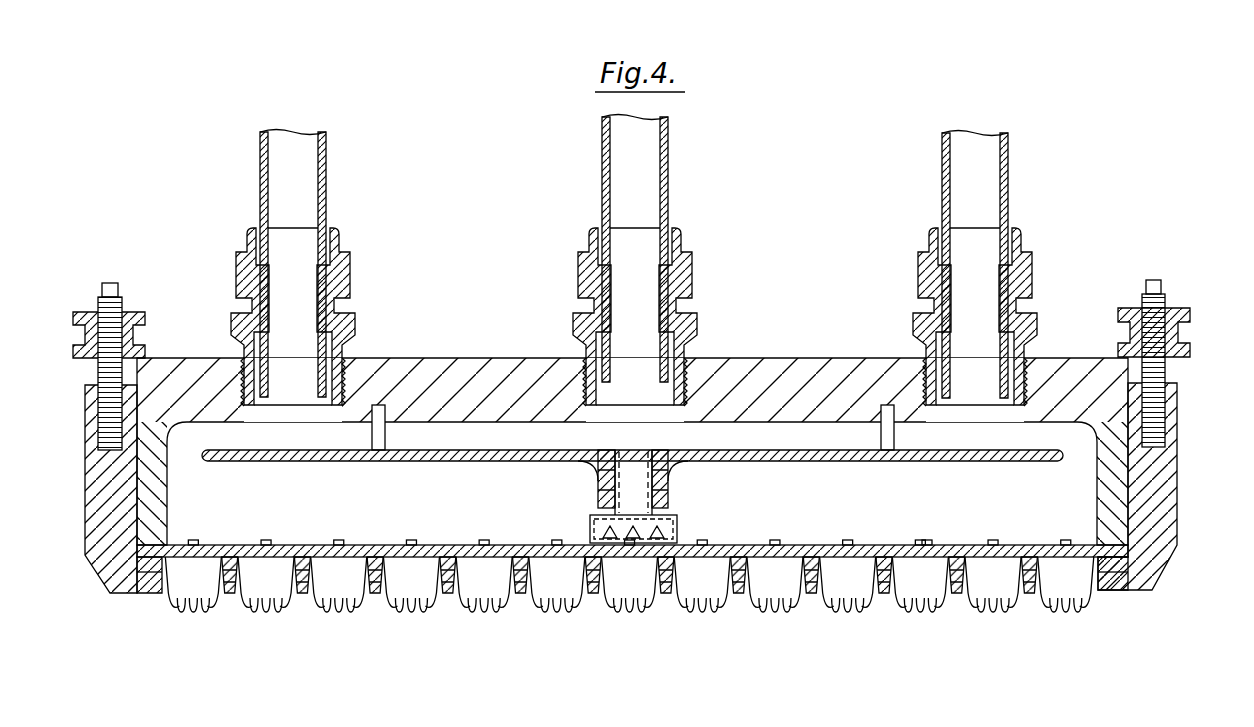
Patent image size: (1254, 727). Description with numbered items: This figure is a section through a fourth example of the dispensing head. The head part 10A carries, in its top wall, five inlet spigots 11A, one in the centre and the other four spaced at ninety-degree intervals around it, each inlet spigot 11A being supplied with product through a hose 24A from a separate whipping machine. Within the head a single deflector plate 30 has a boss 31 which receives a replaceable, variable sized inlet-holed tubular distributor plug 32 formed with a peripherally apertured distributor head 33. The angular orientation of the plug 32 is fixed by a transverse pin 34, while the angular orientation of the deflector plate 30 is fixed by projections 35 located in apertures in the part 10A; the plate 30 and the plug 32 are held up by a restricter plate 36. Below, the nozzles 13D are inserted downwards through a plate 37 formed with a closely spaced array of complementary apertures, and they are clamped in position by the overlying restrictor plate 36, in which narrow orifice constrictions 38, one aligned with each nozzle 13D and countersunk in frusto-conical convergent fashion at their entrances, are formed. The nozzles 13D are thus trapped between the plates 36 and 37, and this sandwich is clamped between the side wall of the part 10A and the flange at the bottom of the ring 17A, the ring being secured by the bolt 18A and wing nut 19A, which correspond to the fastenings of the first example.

The head part 10A is at (778, 368).
The inlet spigot 11A is at (338, 303).
The hose 24A is at (327, 193).
The nozzle 13D is at (833, 607).
The ring 17A is at (1165, 516).
The bolt 18A is at (1165, 292).
The wing nut 19A is at (1185, 334).
The deflector plate 30 is at (790, 462).
The boss 31 is at (668, 497).
The tubular distributor plug 32 is at (633, 500).
The distributor head 33 is at (672, 528).
The transverse pin 34 is at (605, 478).
The projection 35 is at (887, 407).
The restricter plate 36 is at (823, 550).
The apertured plate 37 is at (888, 593).
The orifice constriction 38 is at (927, 546).